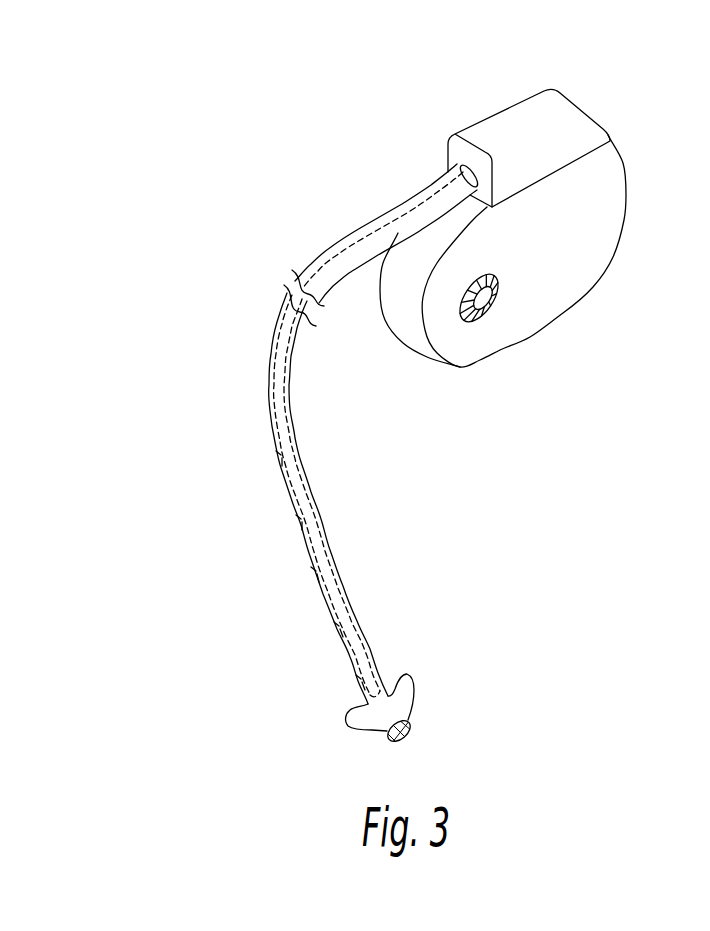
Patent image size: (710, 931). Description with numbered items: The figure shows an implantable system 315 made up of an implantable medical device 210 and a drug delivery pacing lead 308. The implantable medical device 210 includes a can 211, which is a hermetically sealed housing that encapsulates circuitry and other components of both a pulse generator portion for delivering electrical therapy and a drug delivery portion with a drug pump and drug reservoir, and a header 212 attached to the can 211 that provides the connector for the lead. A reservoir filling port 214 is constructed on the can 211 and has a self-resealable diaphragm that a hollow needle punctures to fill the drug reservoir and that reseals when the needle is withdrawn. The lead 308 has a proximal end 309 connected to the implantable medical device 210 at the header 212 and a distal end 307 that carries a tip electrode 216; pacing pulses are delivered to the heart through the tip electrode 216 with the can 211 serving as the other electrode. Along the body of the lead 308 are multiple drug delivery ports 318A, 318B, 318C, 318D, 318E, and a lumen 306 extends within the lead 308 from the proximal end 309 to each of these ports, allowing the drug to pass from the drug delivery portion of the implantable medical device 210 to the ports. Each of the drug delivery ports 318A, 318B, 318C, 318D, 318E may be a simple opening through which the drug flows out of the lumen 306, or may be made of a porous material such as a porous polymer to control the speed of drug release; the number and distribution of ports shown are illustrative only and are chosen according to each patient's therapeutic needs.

The can 211 is at (617, 212).
The header 212 is at (543, 91).
The implantable medical device 210 is at (403, 320).
The reservoir filling port 214 is at (483, 303).
The proximal end 309 is at (437, 178).
The drug delivery pacing lead 308 is at (325, 254).
The lumen 306 is at (297, 327).
The drug delivery port 318E is at (278, 462).
The drug delivery port 318D is at (293, 520).
The drug delivery port 318C is at (310, 575).
The drug delivery port 318B is at (333, 630).
The drug delivery port 318A is at (357, 683).
The tip electrode 216 is at (400, 742).
The distal end 307 is at (410, 738).
The implantable system 315 is at (268, 150).